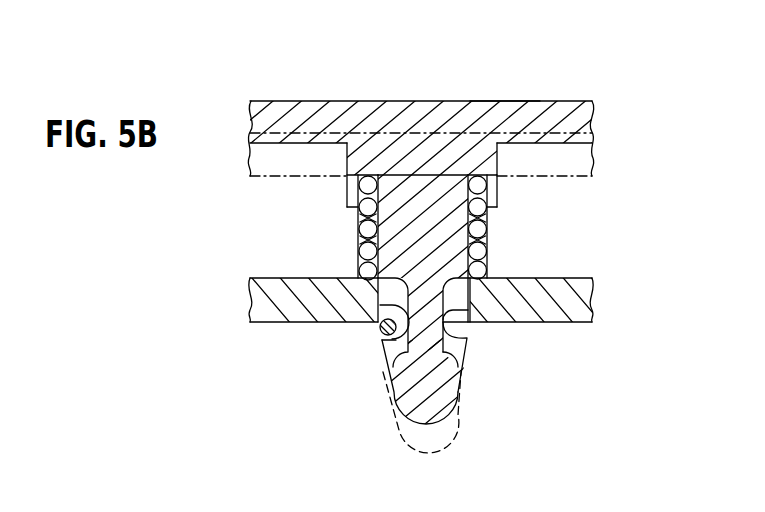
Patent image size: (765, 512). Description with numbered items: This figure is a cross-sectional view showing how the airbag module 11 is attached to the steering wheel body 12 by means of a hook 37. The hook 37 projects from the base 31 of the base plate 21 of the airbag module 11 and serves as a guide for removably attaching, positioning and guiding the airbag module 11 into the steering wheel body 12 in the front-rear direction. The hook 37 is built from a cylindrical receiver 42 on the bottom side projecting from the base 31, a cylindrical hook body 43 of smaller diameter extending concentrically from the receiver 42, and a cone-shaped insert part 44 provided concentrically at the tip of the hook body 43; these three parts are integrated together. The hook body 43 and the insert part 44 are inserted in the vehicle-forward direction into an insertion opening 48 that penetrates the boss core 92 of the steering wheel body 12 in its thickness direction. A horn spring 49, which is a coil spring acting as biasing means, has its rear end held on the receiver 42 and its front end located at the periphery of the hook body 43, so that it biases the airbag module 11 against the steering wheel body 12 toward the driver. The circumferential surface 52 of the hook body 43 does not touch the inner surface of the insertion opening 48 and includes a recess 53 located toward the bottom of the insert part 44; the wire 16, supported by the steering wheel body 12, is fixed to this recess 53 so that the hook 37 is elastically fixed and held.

The airbag module 11 is at (595, 91).
The steering wheel body 12 is at (599, 270).
The wire 16 is at (380, 340).
The base plate 21 is at (553, 101).
The base 31 is at (502, 101).
The hook 37 is at (423, 165).
The receiver 42 is at (483, 156).
The hook body 43 is at (487, 243).
The insert part 44 is at (448, 416).
The insertion opening 48 is at (379, 328).
The horn spring 49 is at (358, 246).
The circumferential surface 52 is at (487, 263).
The recess 53 is at (465, 330).
The boss core 92 is at (578, 312).